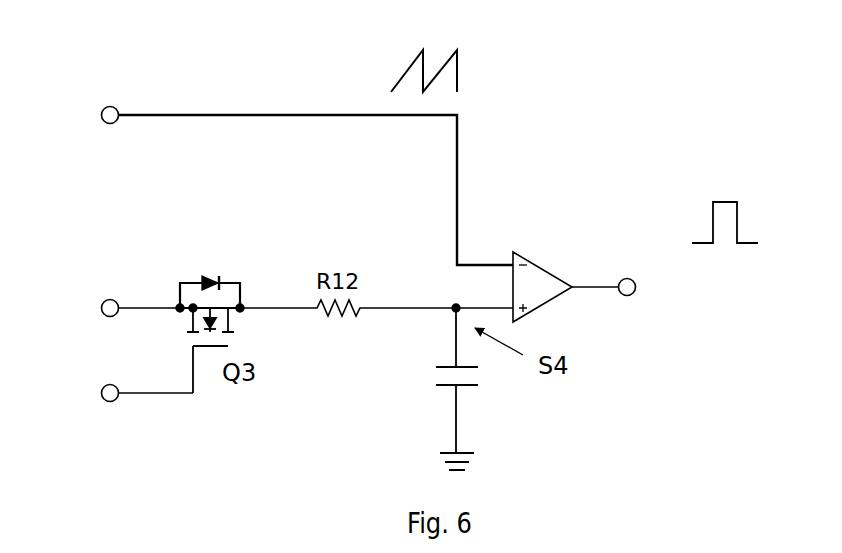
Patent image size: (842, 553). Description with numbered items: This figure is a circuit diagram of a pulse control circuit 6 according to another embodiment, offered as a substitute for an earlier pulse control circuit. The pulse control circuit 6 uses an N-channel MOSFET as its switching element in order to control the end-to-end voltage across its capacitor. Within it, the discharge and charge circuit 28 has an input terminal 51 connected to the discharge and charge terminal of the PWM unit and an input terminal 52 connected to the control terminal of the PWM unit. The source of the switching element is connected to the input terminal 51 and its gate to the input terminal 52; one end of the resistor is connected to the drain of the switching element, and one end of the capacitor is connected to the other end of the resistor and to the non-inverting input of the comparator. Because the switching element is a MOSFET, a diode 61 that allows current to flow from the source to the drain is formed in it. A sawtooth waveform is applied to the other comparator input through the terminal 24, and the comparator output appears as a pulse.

The S2 input terminal 24 is at (112, 105).
The pulse control circuit 6 is at (520, 177).
The input terminal 51 is at (112, 299).
The diode 61 is at (209, 280).
The input terminal 52 is at (112, 402).
The discharge and charge circuit 28 is at (376, 380).